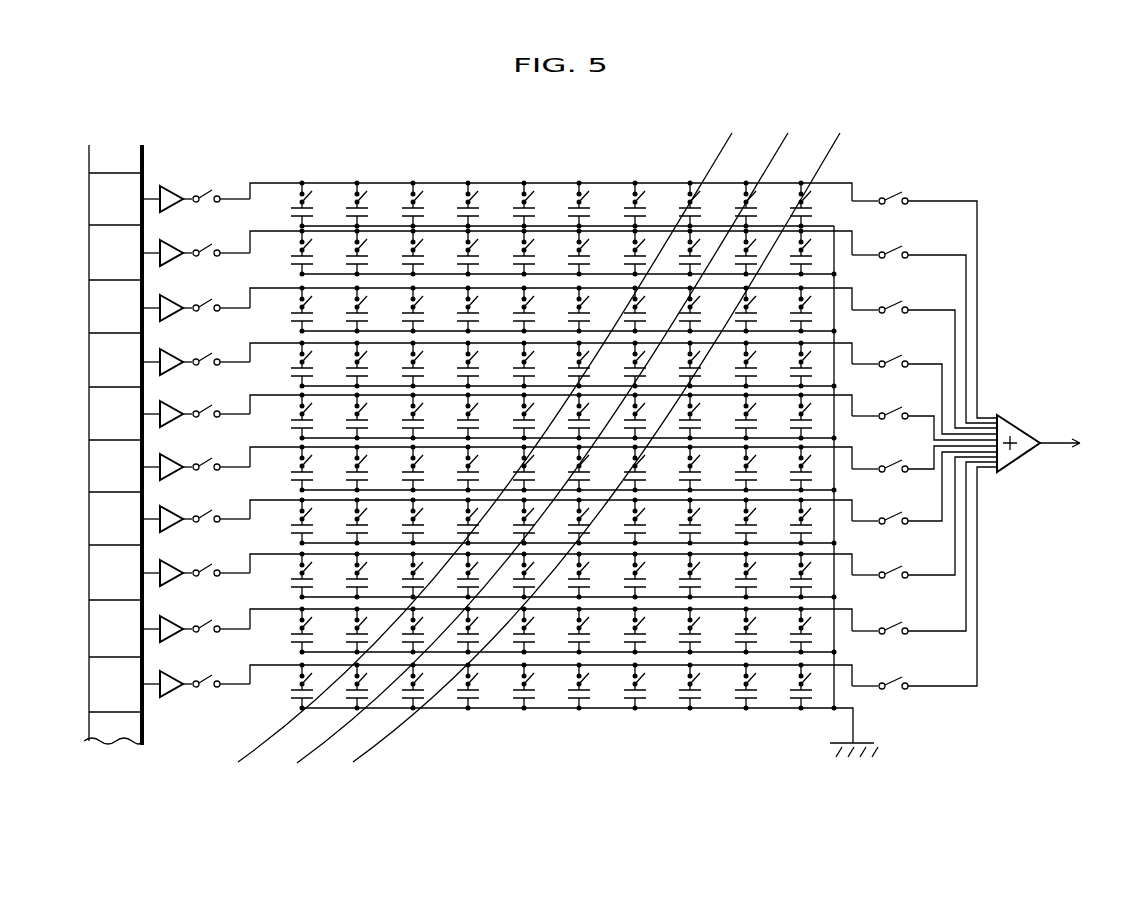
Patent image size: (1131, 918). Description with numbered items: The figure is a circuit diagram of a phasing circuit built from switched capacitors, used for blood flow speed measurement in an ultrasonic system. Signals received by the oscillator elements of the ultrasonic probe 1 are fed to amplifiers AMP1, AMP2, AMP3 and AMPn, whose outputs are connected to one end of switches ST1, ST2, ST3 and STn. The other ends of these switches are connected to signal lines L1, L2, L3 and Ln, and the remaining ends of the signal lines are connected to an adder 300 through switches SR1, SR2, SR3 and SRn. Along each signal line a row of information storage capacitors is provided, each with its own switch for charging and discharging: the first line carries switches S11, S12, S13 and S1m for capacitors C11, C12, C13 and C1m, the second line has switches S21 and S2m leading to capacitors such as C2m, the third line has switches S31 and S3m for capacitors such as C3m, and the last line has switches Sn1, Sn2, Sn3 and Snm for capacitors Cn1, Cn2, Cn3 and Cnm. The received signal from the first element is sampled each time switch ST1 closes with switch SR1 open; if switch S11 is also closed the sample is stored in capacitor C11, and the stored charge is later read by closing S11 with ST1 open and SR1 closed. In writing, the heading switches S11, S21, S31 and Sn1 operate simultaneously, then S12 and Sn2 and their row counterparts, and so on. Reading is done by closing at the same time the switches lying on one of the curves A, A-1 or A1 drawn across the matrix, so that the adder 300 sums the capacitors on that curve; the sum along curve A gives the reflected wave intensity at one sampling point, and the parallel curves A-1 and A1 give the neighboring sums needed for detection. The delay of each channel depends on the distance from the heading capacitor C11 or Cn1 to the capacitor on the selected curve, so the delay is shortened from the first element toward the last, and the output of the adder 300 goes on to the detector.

The ultrasonic probe 1 is at (110, 147).
The adder 300 is at (1012, 414).
The amplifier AMP1 is at (170, 186).
The amplifier AMP2 is at (168, 246).
The amplifier AMP3 is at (168, 301).
The amplifier AMPn is at (176, 697).
The switch ST1 is at (212, 189).
The switch ST2 is at (213, 244).
The switch ST3 is at (213, 299).
The switch STn is at (218, 678).
The signal line L1 is at (258, 182).
The signal line L2 is at (260, 234).
The signal line L3 is at (240, 300).
The signal line Ln is at (862, 690).
The switch SR1 is at (884, 187).
The switch SR2 is at (905, 299).
The switch SR3 is at (884, 347).
The switch SRn is at (889, 671).
The switch S11 is at (288, 195).
The switch S12 is at (344, 195).
The switch S13 is at (400, 193).
The switch S1m is at (784, 195).
The switch S21 is at (288, 247).
The switch S2m is at (812, 250).
The switch S31 is at (288, 302).
The switch S3m is at (812, 305).
The switch Sn1 is at (292, 677).
The switch Sn2 is at (368, 678).
The switch Sn3 is at (424, 680).
The switch Snm is at (787, 677).
The information storage capacitor C11 is at (323, 216).
The information storage capacitor C12 is at (378, 216).
The information storage capacitor C13 is at (434, 216).
The information storage capacitor C1m is at (825, 216).
The information storage capacitor C2m is at (815, 268).
The information storage capacitor C3m is at (815, 323).
The information storage capacitor Cn1 is at (287, 701).
The information storage capacitor Cn2 is at (352, 696).
The information storage capacitor Cn3 is at (413, 702).
The information storage capacitor Cnm is at (800, 702).
The curve A-1 is at (491, 435).
The curve A is at (544, 436).
The curve A1 is at (601, 435).